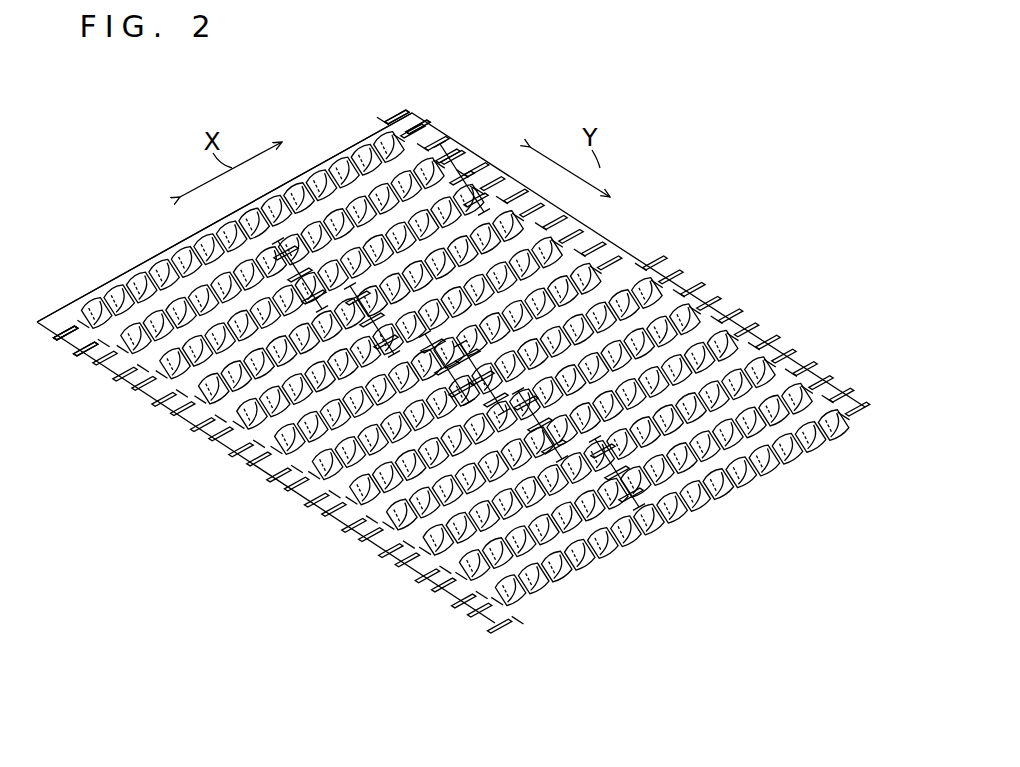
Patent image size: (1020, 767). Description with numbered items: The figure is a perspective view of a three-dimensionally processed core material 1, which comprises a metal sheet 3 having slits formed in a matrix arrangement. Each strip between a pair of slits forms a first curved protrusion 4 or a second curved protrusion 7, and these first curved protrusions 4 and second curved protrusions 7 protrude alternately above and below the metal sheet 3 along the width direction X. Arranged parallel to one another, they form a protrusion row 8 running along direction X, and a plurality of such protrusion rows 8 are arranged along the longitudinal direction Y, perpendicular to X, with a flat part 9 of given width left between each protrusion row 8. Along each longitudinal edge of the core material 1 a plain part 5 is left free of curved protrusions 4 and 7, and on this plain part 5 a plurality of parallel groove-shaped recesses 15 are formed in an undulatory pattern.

The core material 1 is at (451, 362).
The metal sheet 3 is at (224, 217).
The first curved protrusion 4 is at (461, 369).
The plain part 5 is at (222, 209).
The second curved protrusion 7 is at (506, 344).
The protrusion row 8 is at (442, 344).
The flat part 9 is at (446, 370).
The groove-shaped recess 15 is at (500, 346).